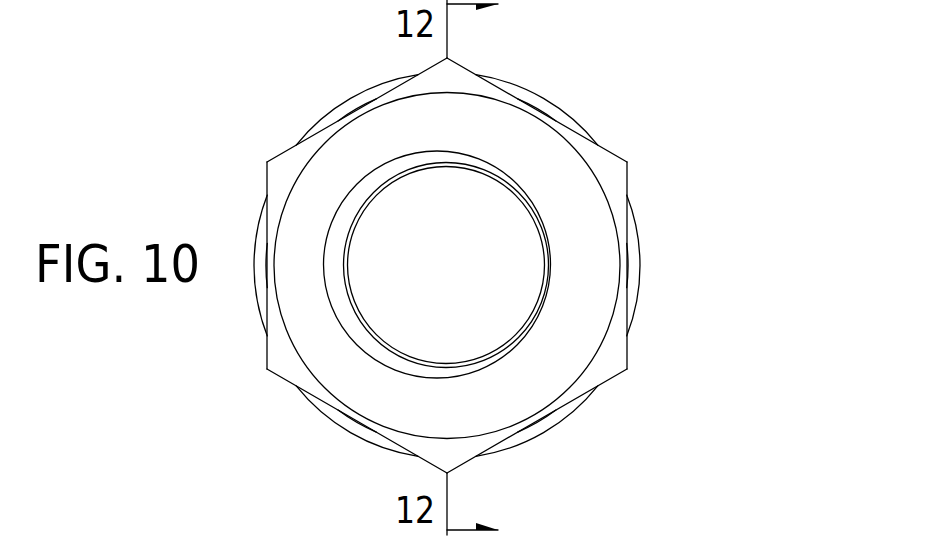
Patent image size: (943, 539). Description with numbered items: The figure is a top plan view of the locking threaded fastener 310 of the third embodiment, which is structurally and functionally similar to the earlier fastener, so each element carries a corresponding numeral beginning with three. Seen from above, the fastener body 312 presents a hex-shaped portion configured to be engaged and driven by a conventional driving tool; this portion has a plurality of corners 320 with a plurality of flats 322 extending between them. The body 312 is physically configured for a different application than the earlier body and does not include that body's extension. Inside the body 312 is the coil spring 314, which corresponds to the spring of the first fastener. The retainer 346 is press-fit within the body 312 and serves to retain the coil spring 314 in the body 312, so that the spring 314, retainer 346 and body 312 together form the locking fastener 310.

The locking threaded fastener 310 is at (662, 65).
The fastener body 312 is at (636, 183).
The coil spring 314 is at (388, 334).
The corners 320 is at (628, 370).
The flats 322 is at (628, 350).
The retainer 346 is at (503, 137).